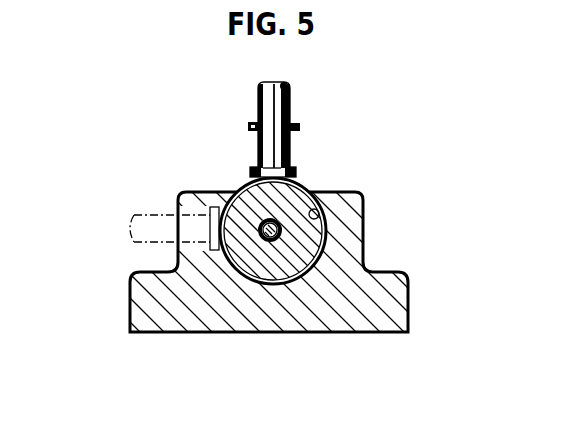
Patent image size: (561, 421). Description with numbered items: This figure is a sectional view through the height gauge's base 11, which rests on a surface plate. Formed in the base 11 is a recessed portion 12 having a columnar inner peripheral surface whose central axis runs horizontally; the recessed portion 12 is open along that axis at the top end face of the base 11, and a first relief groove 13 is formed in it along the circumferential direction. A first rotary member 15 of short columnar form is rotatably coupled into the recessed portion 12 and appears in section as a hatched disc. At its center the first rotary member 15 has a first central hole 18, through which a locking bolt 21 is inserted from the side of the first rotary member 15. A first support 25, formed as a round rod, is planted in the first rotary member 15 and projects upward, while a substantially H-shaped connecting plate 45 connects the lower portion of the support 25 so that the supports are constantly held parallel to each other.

The base 11 is at (392, 276).
The recessed portion 12 is at (320, 196).
The first relief groove 13 is at (200, 200).
The first rotary member 15 is at (246, 190).
The first central hole 18 is at (282, 229).
The locking bolt 21 is at (299, 186).
The first support 25 is at (291, 90).
The connecting plate 45 is at (253, 124).